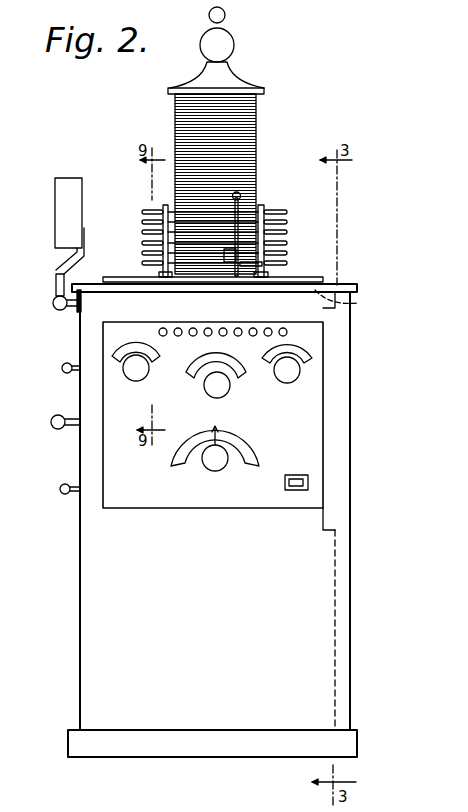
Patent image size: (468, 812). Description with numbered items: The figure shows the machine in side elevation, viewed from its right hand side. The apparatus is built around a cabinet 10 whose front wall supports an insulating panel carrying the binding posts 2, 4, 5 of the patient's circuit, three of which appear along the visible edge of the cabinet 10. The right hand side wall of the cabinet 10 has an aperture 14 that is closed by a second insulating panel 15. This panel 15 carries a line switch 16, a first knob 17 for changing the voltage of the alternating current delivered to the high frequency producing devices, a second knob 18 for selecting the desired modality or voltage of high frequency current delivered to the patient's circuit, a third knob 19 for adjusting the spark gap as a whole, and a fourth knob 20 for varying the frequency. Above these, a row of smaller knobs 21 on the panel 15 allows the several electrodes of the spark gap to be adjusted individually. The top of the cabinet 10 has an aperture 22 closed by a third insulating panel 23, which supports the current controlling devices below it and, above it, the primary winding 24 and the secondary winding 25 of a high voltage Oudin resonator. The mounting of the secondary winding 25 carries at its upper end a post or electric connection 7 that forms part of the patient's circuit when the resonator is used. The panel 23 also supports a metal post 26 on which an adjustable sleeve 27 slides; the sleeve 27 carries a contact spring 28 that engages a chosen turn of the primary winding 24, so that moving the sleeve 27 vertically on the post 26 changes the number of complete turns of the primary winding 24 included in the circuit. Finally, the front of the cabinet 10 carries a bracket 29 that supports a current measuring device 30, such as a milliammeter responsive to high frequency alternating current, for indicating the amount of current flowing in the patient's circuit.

The binding post 2 is at (62, 368).
The binding post 4 is at (60, 489).
The binding post 5 is at (51, 422).
The post or electric connection 7 is at (216, 50).
The cabinet 10 is at (350, 600).
The aperture 14 is at (106, 439).
The second insulating panel 15 is at (112, 490).
The line switch 16 is at (300, 473).
The first knob 17 is at (202, 462).
The second knob 18 is at (300, 371).
The third knob 19 is at (206, 390).
The fourth knob 20 is at (124, 372).
The smaller knobs 21 is at (268, 330).
The aperture 22 is at (359, 303).
The third panel 23 is at (323, 279).
The primary winding 24 is at (276, 220).
The secondary winding 25 is at (252, 115).
The metal post 26 is at (241, 206).
The adjustable sleeve 27 is at (266, 272).
The contact spring 28 is at (270, 247).
The bracket 29 is at (56, 308).
The current measuring device 30 is at (64, 186).